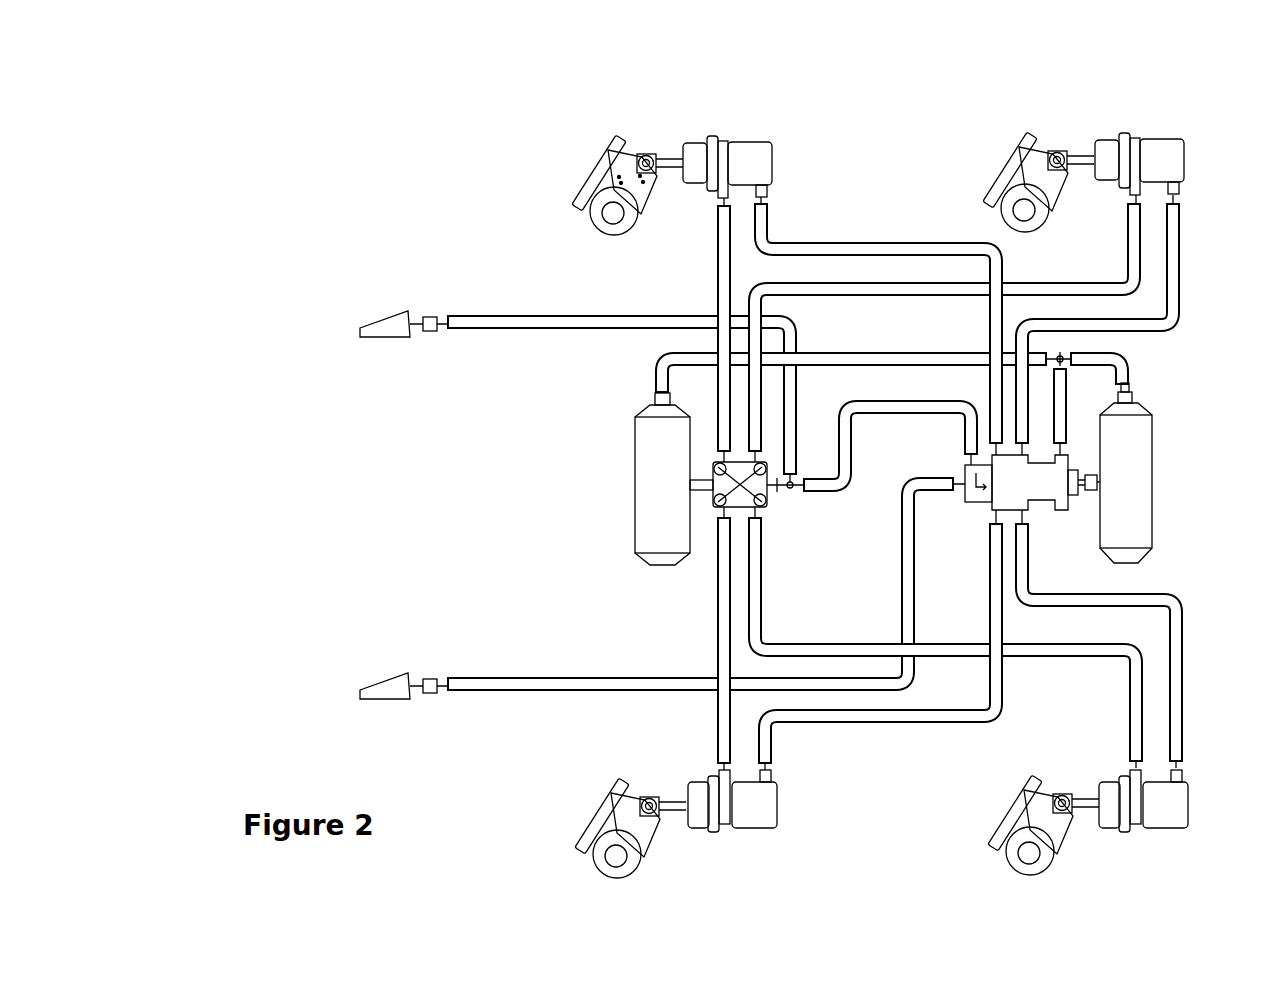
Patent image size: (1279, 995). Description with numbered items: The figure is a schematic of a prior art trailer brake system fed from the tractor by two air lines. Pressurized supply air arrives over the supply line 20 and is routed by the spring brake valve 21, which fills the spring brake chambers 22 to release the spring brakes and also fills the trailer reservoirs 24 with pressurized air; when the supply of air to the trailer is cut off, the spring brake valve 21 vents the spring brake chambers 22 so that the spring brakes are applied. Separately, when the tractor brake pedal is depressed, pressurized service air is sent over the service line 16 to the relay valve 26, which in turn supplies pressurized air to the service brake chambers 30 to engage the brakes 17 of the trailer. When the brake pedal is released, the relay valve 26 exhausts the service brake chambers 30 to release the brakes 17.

The service line 16 is at (482, 327).
The brakes 17 is at (608, 237).
The supply line 20 is at (482, 690).
The spring brake valve 21 is at (1033, 496).
The spring brake chambers 22 is at (770, 160).
The trailer reservoirs 24 is at (675, 492).
The relay valve 26 is at (765, 502).
The service brake chambers 30 is at (714, 140).